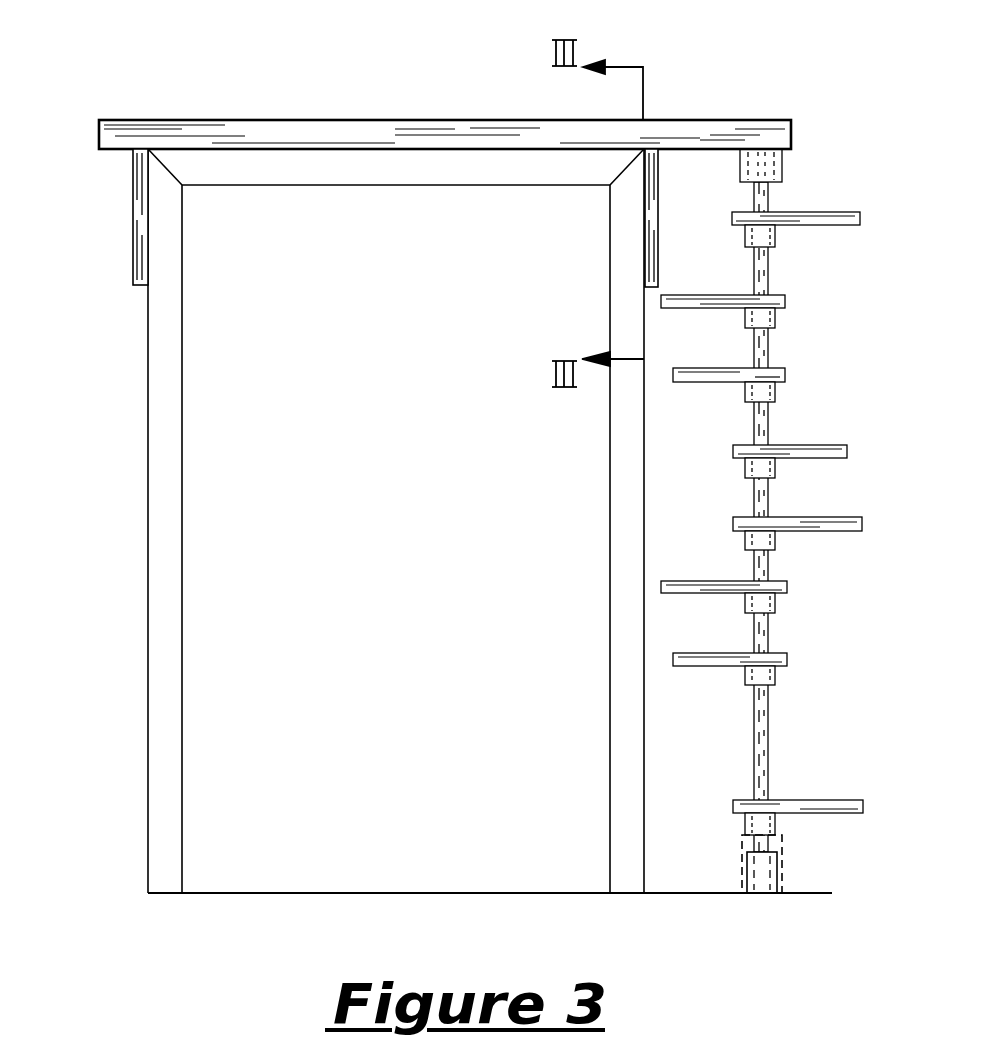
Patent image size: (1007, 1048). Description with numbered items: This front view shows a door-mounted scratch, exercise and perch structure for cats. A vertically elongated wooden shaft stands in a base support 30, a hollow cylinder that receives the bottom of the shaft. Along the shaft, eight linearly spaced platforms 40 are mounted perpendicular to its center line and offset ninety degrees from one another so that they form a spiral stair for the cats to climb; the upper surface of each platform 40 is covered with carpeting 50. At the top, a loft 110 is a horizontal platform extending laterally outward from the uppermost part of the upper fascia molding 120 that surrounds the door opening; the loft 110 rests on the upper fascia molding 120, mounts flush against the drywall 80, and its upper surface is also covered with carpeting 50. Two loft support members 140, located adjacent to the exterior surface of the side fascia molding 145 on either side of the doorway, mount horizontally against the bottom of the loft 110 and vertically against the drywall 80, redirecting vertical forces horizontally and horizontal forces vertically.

The base support 30 is at (765, 873).
The platforms 40 is at (779, 523).
The carpeting 50 is at (818, 445).
The drywall 80 is at (522, 453).
The loft 110 is at (790, 120).
The upper fascia molding 120 is at (385, 185).
The loft support members 140 is at (133, 212).
The side fascia molding 145 is at (610, 452).